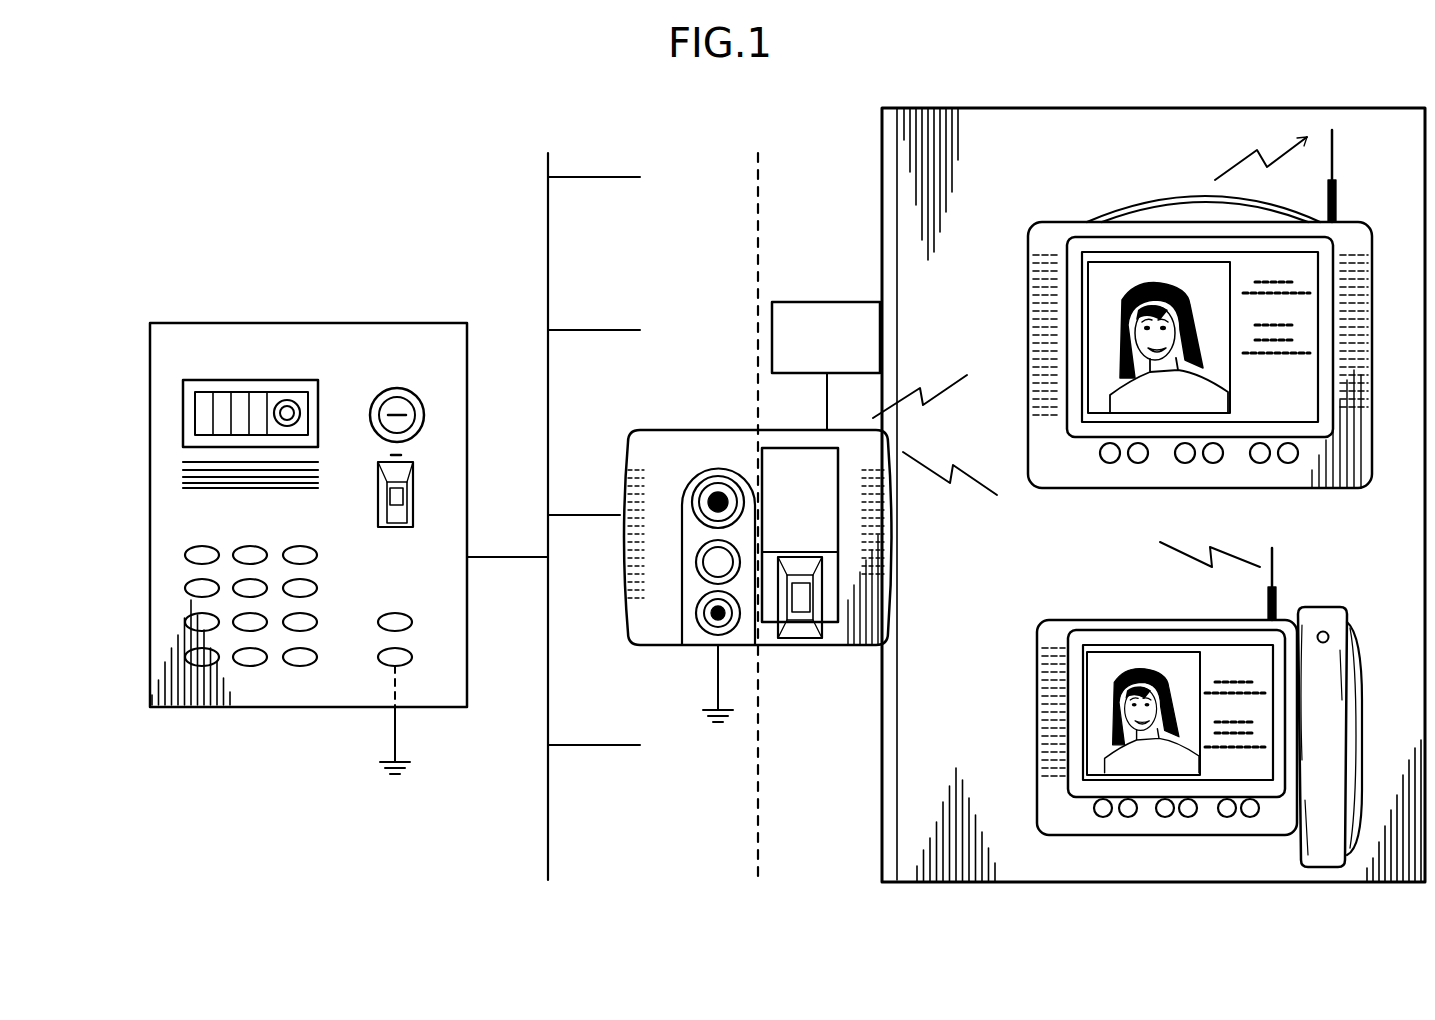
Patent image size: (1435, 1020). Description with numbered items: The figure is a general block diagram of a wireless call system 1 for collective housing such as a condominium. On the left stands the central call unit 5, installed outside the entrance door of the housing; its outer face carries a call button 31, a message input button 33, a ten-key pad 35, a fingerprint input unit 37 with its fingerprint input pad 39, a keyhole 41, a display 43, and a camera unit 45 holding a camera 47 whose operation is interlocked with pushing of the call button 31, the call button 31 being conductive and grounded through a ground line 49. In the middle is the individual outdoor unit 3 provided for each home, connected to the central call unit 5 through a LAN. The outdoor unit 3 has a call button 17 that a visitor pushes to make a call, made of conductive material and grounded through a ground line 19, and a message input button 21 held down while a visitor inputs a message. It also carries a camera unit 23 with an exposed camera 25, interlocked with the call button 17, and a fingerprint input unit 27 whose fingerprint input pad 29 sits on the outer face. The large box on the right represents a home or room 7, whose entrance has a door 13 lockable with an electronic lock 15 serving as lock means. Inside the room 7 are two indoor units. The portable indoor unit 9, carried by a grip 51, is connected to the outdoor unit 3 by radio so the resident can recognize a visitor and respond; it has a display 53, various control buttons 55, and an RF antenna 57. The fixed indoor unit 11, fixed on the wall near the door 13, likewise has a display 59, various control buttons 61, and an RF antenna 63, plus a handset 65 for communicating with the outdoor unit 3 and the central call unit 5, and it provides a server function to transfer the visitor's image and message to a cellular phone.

The wireless call system 1 is at (785, 124).
The outdoor unit 3 is at (667, 422).
The central call unit 5 is at (377, 315).
The room 7 is at (968, 122).
The portable indoor unit 9 is at (1181, 336).
The fixed indoor unit 11 is at (1143, 696).
The door 13 is at (880, 149).
The electronic lock 15 is at (823, 302).
The call button 17 is at (698, 621).
The ground line 19 is at (715, 688).
The message input button 21 is at (694, 562).
The camera unit 23 is at (741, 462).
The camera 25 is at (712, 478).
The fingerprint input unit 27 is at (833, 658).
The fingerprint input pad 29 is at (800, 618).
The call button 31 is at (384, 667).
The message input button 33 is at (402, 614).
The ten-key pad 35 is at (171, 604).
The fingerprint input unit 37 is at (354, 513).
The fingerprint input pad 39 is at (397, 500).
The keyhole 41 is at (400, 388).
The display 43 is at (210, 390).
The camera unit 45 is at (281, 388).
The camera 47 is at (286, 400).
The ground line 49 is at (399, 747).
The grip 51 is at (1172, 194).
The display 53 is at (1121, 257).
The control buttons 55 is at (1117, 475).
The RF antenna 57 is at (1340, 150).
The display 59 is at (1128, 652).
The control buttons 61 is at (1096, 828).
The RF antenna 63 is at (1278, 556).
The handset 65 is at (1330, 606).